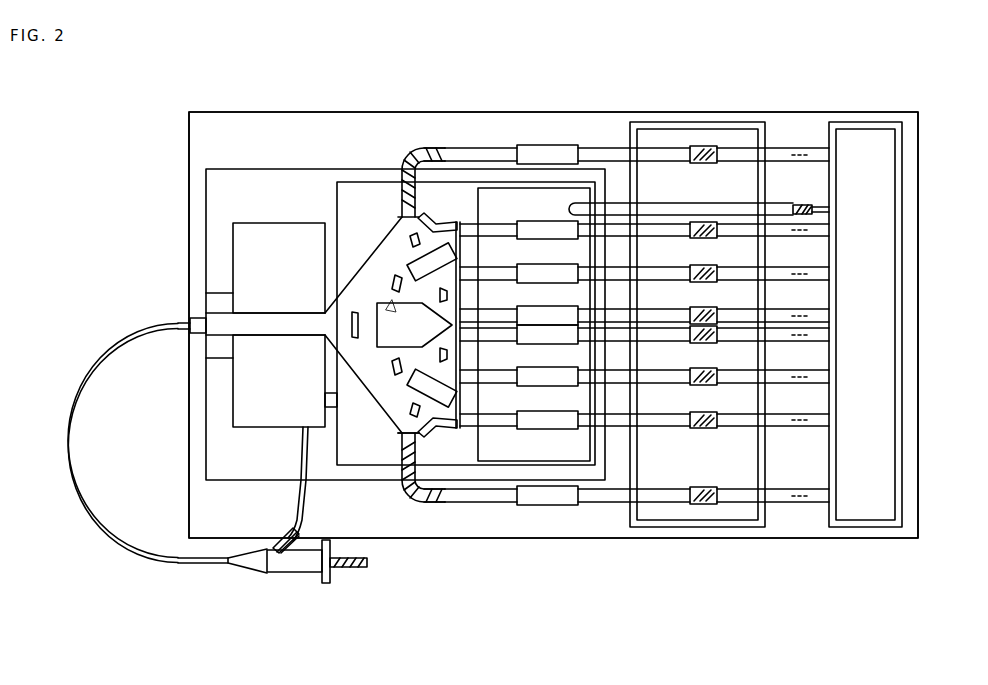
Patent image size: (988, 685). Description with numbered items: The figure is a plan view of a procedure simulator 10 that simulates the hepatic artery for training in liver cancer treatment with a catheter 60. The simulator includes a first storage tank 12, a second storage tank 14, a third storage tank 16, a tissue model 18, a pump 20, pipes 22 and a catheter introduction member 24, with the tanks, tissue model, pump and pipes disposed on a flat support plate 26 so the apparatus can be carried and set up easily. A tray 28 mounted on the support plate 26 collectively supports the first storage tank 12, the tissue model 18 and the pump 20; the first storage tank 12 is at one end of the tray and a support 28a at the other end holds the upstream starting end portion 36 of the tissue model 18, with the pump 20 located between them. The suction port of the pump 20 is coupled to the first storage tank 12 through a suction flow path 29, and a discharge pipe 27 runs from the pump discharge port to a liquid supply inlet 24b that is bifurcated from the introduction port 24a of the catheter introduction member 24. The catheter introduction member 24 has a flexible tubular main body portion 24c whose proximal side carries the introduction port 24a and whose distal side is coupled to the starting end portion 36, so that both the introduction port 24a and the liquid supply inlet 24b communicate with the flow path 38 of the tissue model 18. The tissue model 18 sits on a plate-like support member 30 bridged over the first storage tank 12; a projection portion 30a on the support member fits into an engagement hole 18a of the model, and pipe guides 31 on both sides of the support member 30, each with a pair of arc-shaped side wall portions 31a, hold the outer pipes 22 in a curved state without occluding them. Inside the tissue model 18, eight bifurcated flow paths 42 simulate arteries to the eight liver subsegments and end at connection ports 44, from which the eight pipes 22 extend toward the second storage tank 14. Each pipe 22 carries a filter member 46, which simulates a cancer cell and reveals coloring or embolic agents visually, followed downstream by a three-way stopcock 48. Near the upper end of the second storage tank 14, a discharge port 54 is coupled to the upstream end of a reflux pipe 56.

The procedure simulator 10 is at (95, 132).
The first storage tank 12 is at (496, 188).
The second storage tank 14 is at (862, 122).
The third storage tank 16 is at (690, 122).
The tissue model 18 is at (386, 262).
The engagement hole 18a is at (380, 352).
The pump 20 is at (278, 223).
The pipes 22 is at (470, 148).
The catheter introduction member 24 is at (204, 563).
The introduction port 24a is at (295, 573).
The liquid supply inlet 24b is at (284, 534).
The main body portion 24c is at (177, 563).
The support plate 26 is at (546, 112).
The discharge pipe 27 is at (306, 497).
The tray 28 is at (230, 169).
The support 28a is at (206, 295).
The suction flow path 29 is at (337, 402).
The support member 30 is at (350, 182).
The projection portion 30a is at (396, 310).
The pipe guide 31 is at (405, 158).
The side wall portions 31a is at (428, 148).
The starting end portion 36 is at (192, 333).
The flow path 38 is at (268, 313).
The bifurcated flow paths 42 is at (417, 434).
The connection ports 44 is at (418, 217).
The filter member 46 is at (540, 233).
The three-way stopcock 48 is at (702, 222).
The discharge port 54 is at (826, 203).
The reflux pipe 56 is at (656, 203).
The catheter 60 is at (344, 570).